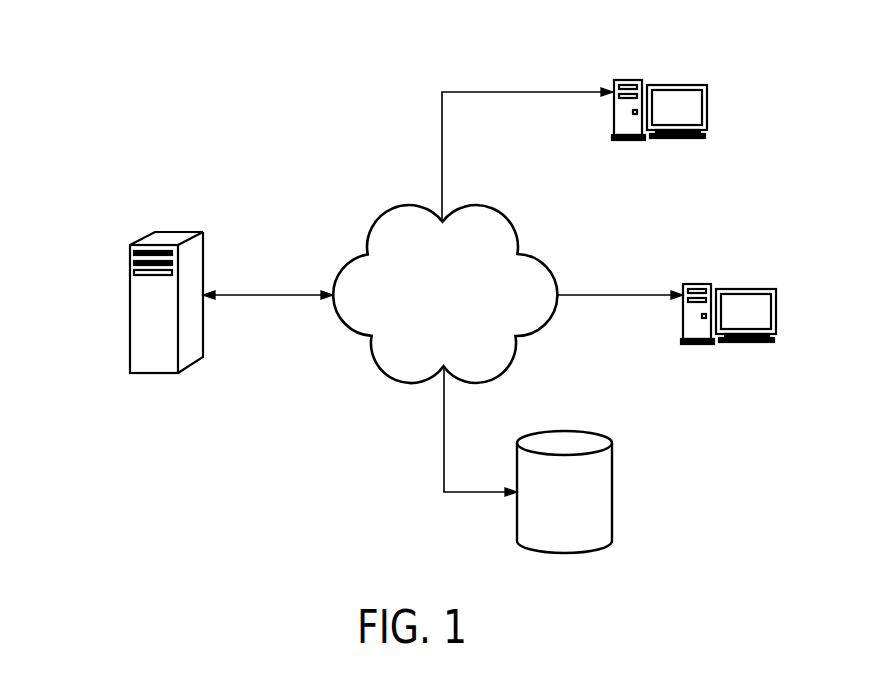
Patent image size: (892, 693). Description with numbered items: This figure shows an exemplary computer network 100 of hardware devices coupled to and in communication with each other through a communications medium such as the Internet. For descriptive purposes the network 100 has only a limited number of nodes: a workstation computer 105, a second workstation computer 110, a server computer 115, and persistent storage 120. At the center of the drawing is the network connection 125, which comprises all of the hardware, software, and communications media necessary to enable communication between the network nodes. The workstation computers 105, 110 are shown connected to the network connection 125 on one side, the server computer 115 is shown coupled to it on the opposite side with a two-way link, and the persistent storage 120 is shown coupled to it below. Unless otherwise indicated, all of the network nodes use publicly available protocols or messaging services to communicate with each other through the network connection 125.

The network 100 is at (330, 173).
The workstation computer 105 is at (678, 84).
The workstation computer 110 is at (748, 288).
The server computer 115 is at (130, 271).
The persistent storage 120 is at (612, 484).
The network connection 125 is at (465, 312).